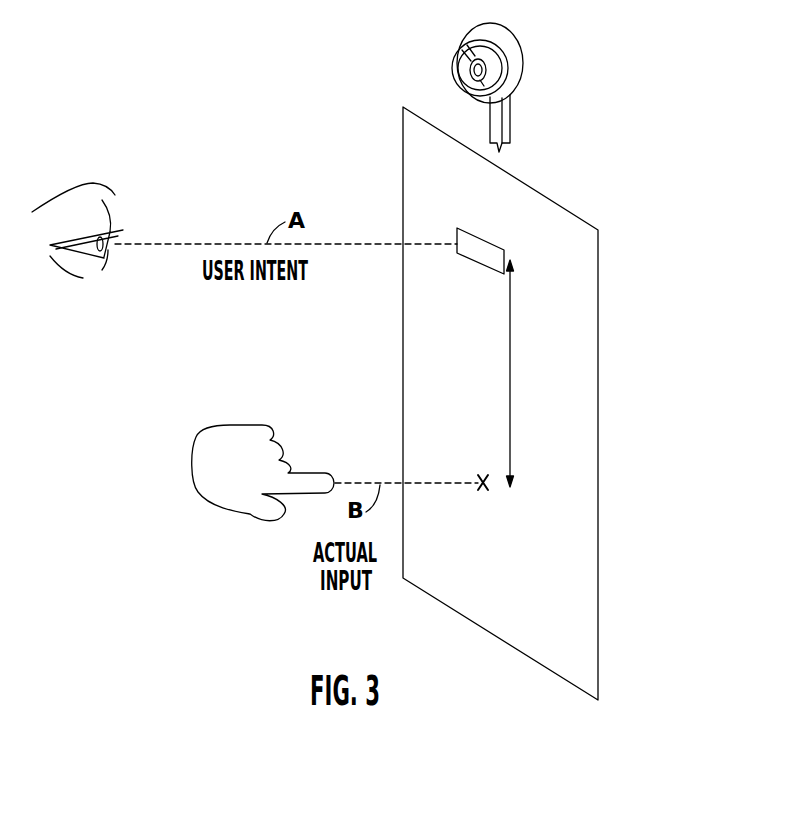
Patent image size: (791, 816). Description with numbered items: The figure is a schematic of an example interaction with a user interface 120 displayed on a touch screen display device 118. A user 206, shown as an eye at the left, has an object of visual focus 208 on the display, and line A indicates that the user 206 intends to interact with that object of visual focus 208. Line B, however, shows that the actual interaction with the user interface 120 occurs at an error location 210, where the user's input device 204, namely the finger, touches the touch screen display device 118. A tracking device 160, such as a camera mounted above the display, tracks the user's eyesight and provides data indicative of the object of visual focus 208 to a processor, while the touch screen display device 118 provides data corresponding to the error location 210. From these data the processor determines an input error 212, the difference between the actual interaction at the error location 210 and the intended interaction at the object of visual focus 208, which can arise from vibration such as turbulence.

The touch screen display device 118 is at (662, 146).
The user interface 120 is at (582, 510).
The tracking device 160 is at (510, 43).
The input device 204 is at (250, 415).
The user 206 is at (93, 165).
The object of visual focus 208 is at (520, 250).
The error location 210 is at (487, 500).
The input error 212 is at (522, 328).